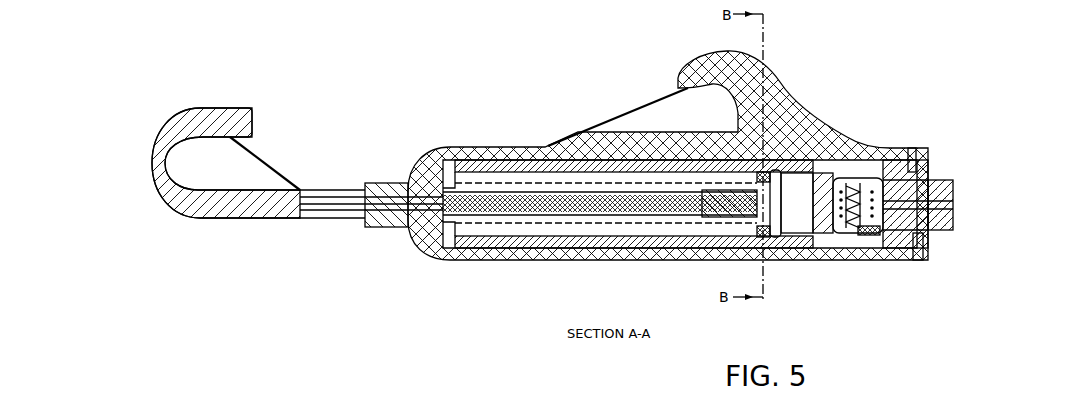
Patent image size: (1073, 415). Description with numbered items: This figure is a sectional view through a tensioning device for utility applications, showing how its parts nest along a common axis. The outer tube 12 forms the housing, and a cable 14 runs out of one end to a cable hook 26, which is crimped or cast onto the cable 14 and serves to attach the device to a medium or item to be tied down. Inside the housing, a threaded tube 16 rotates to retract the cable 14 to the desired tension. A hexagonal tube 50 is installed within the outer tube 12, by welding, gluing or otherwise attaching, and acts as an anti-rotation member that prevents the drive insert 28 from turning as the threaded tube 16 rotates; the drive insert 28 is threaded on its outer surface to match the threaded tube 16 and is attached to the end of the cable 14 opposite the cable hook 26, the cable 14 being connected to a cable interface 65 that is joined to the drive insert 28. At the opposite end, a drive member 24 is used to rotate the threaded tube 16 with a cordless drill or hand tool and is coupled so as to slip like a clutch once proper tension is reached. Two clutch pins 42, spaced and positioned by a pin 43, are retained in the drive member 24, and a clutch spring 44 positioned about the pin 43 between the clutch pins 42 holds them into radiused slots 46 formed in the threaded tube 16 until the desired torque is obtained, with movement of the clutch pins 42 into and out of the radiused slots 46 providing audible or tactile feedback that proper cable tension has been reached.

The outer tube 12 is at (477, 147).
The cable 14 is at (352, 207).
The threaded tube 16 is at (770, 167).
The drive member 24 is at (953, 216).
The cable hook 26 is at (153, 180).
The drive insert 28 is at (777, 232).
The clutch pins 42 is at (850, 177).
The pin 43 is at (863, 183).
The clutch spring 44 is at (870, 197).
The radiused slots 46 is at (868, 235).
The hexagonal tube 50 is at (673, 220).
The cable interface 65 is at (727, 213).